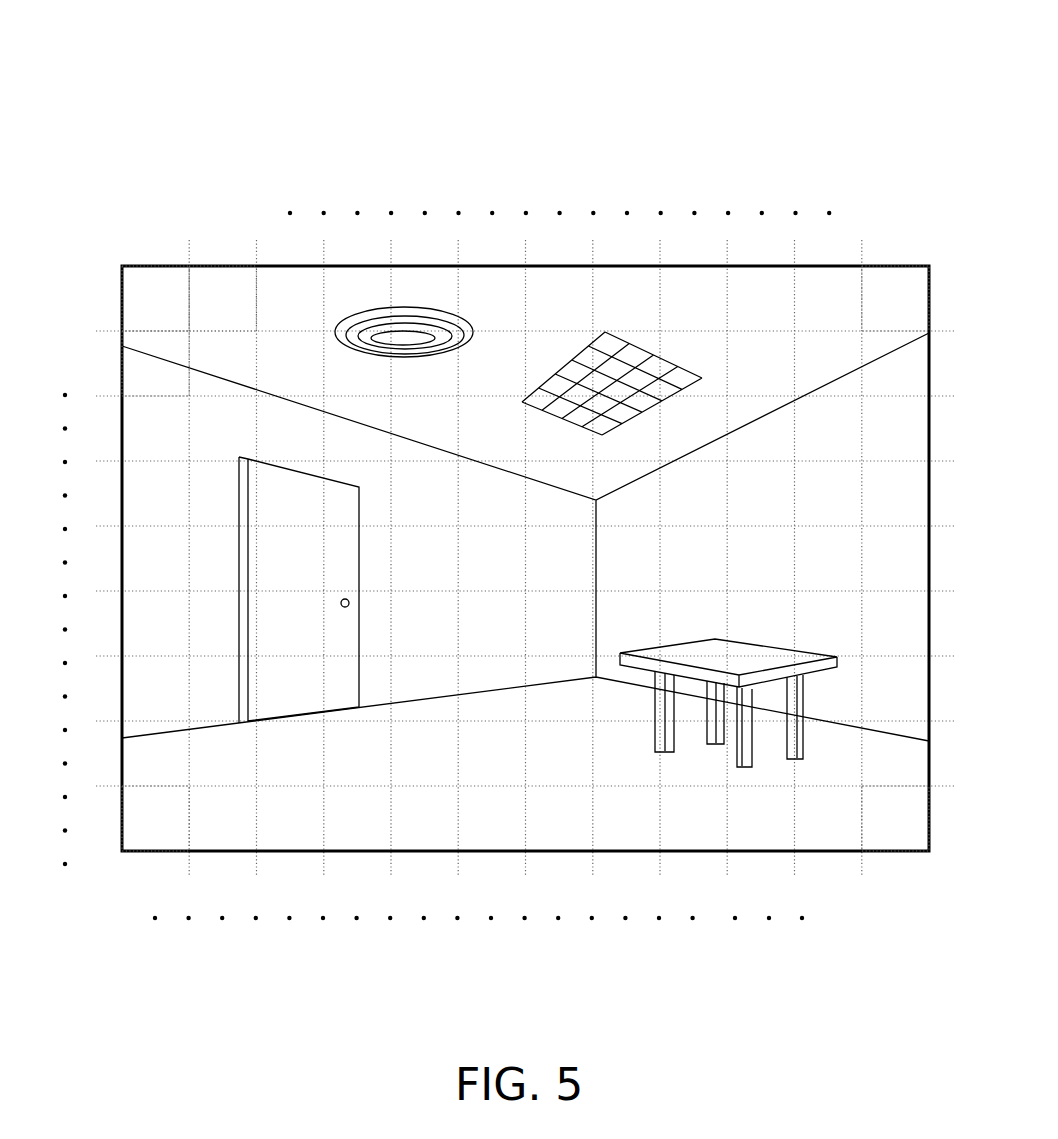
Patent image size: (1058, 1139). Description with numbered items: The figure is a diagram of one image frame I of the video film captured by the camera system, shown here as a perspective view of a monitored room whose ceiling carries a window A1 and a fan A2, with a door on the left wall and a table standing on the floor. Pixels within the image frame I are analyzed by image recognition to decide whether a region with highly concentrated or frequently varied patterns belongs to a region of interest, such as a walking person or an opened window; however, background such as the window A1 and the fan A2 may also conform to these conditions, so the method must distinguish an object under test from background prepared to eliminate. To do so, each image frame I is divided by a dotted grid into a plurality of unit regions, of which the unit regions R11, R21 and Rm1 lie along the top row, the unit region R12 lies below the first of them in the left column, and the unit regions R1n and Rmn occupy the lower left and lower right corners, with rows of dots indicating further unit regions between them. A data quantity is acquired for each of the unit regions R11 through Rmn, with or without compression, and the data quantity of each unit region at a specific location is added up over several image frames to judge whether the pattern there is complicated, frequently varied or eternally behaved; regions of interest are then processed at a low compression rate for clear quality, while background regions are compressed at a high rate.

The image frame I is at (793, 77).
The window A1 is at (692, 350).
The fan A2 is at (364, 283).
The unit region R11 is at (147, 283).
The unit region R21 is at (222, 283).
The unit region Rm1 is at (901, 283).
The unit region R12 is at (152, 373).
The unit region R1n is at (154, 837).
The unit region Rmn is at (902, 823).